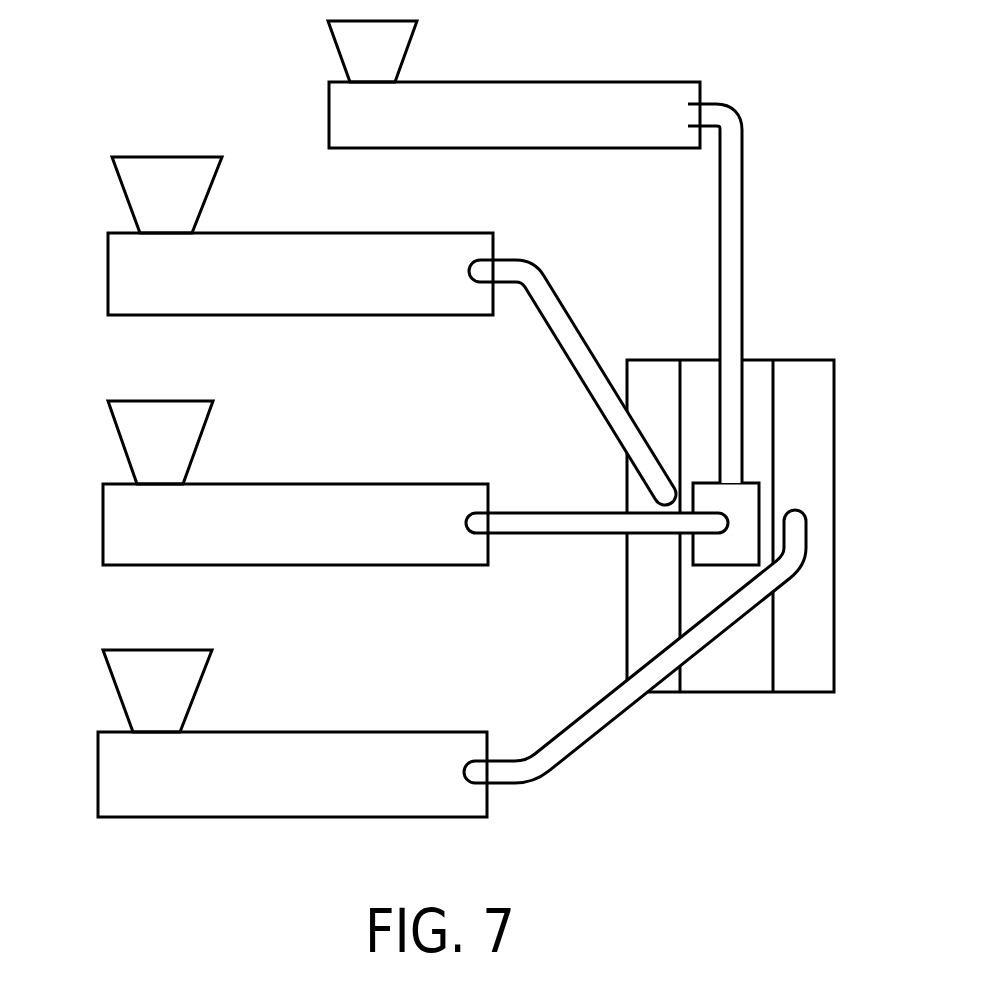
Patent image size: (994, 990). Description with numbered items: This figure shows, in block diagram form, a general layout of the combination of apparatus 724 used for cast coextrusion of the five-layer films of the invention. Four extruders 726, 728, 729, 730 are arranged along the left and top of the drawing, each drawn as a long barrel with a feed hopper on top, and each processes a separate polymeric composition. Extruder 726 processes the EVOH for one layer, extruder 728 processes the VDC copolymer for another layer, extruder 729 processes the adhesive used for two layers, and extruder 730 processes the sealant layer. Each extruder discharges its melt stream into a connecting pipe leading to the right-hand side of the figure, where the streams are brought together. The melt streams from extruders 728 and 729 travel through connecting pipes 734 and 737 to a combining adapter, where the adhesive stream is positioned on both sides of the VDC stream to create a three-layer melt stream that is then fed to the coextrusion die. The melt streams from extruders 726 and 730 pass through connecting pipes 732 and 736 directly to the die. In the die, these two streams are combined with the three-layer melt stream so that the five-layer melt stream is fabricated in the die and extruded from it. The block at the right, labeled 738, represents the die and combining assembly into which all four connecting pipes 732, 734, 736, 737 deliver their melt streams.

The combination of apparatus 724 is at (253, 97).
The extruder 726 is at (332, 315).
The extruder 728 is at (330, 565).
The extruder 729 is at (530, 82).
The extruder 730 is at (190, 817).
The connecting pipe 732 is at (567, 310).
The connecting pipe 734 is at (562, 513).
The connecting pipe 736 is at (597, 701).
The connecting pipe 737 is at (742, 212).
The feedblock 738 is at (708, 693).